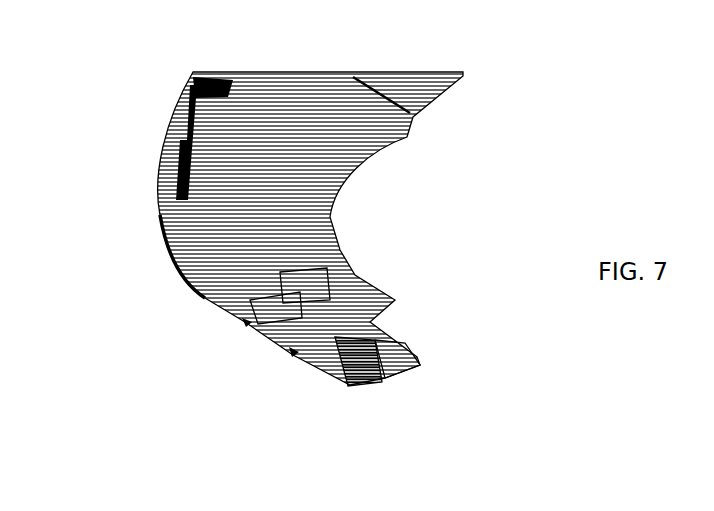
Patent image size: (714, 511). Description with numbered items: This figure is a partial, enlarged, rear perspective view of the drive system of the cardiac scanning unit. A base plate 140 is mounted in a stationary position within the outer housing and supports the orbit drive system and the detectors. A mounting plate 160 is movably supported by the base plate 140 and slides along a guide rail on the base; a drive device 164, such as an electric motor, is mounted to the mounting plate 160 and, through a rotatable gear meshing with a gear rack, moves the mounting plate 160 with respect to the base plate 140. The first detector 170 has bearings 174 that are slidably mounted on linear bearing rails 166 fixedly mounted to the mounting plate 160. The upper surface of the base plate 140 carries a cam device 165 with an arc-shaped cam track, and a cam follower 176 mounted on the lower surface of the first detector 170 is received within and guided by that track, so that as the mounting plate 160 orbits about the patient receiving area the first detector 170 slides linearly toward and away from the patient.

The base plate 140 is at (322, 433).
The mounting plate 160 is at (160, 211).
The drive device 164 is at (190, 123).
The cam device 165 is at (387, 372).
The linear bearing rails 166 is at (291, 350).
The first detector 170 is at (487, 200).
The bearings 174 is at (295, 280).
The cam follower 176 is at (371, 350).